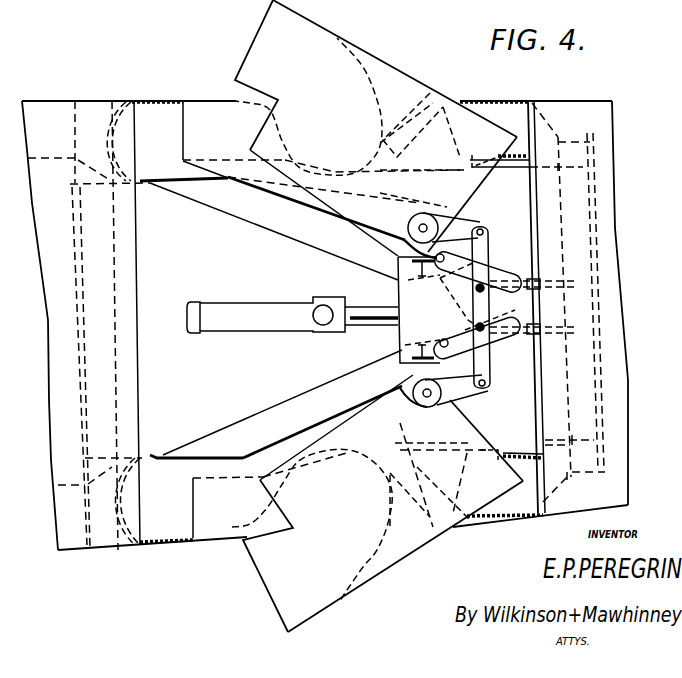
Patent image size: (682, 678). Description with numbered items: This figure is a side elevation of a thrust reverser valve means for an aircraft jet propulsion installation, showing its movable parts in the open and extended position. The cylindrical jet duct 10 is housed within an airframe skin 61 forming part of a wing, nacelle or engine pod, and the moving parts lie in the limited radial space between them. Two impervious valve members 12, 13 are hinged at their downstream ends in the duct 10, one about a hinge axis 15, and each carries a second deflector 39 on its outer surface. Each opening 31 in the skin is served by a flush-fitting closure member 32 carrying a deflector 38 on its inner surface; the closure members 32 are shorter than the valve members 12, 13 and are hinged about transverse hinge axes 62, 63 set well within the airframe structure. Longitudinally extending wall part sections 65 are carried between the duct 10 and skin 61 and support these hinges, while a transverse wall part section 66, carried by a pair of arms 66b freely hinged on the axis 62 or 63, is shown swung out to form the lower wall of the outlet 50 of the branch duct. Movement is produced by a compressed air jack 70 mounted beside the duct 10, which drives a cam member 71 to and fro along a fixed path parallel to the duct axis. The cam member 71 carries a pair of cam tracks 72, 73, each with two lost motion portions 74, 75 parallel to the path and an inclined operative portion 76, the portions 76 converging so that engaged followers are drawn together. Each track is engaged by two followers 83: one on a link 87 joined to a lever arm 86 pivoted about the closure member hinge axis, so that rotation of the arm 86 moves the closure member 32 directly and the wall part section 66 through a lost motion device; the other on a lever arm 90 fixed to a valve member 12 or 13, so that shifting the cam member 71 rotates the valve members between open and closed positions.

The jet duct 10 is at (150, 270).
The valve member 12 is at (307, 235).
The valve member 13 is at (327, 392).
The hinge axis 15 is at (513, 328).
The opening 31 is at (198, 100).
The closure member 32 is at (417, 80).
The deflector 38 is at (372, 93).
The second deflector 39 is at (385, 143).
The outlet 50 is at (257, 33).
The airframe skin 61 is at (570, 100).
The hinge axis 62 is at (428, 222).
The hinge axis 63 is at (428, 398).
The wall part section 65 is at (213, 194).
The wall part section 66 is at (235, 80).
The arm 66b is at (273, 190).
The jack 70 is at (272, 307).
The cam member 71 is at (398, 328).
The cam track 72 is at (419, 310).
The cam track 73 is at (421, 343).
The lost motion portion 74 is at (402, 242).
The lost motion portion 75 is at (543, 270).
The operative portion 76 is at (475, 296).
The follower 83 is at (483, 230).
The lever arm 86 is at (462, 223).
The link 87 is at (488, 250).
The lever arm 90 is at (493, 270).